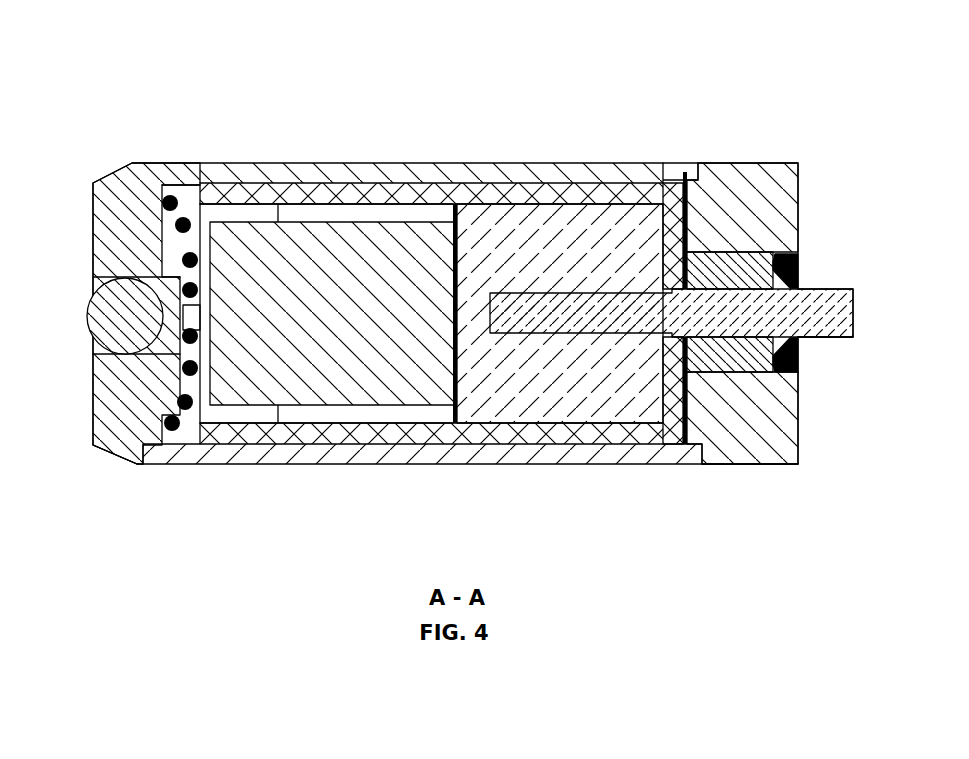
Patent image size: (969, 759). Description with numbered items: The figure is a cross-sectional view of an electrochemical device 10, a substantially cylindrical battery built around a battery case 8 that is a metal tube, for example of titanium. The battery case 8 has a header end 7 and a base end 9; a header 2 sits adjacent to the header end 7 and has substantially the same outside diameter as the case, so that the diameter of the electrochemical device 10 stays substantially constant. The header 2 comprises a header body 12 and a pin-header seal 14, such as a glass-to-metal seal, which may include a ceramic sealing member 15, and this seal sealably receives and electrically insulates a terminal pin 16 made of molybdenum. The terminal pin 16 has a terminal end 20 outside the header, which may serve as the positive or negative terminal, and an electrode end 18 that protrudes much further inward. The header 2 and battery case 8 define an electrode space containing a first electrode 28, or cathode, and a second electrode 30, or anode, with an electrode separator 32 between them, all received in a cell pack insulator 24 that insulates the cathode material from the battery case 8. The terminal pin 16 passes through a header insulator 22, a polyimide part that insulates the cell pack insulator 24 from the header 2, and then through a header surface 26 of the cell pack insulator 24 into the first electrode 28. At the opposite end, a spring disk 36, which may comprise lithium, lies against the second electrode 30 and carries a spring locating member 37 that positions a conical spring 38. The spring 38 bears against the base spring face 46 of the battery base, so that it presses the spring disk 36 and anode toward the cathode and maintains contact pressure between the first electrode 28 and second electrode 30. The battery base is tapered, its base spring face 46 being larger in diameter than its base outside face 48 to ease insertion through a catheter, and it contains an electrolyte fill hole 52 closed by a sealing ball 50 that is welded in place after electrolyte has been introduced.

The header 2 is at (832, 470).
The header end 7 is at (706, 467).
The battery case 8 is at (567, 161).
The base end 9 is at (76, 518).
The electrochemical device 10 is at (338, 62).
The header body 12 is at (755, 162).
The pin-header seal 14 is at (768, 253).
The ceramic sealing member 15 is at (803, 352).
The terminal pin 16 is at (845, 339).
The electrode end 18 is at (506, 302).
The terminal end 20 is at (862, 297).
The header insulator 22 is at (682, 178).
The cell pack insulator 24 is at (618, 437).
The header surface 26 is at (685, 447).
The first electrode 28 is at (528, 412).
The second electrode 30 is at (289, 386).
The electrode separator 32 is at (452, 430).
The spring disk 36 is at (210, 206).
The spring locating member 37 is at (205, 320).
The spring 38 is at (167, 403).
The base spring face 46 is at (157, 187).
The base outside face 48 is at (92, 216).
The sealing ball 50 is at (85, 319).
The electrolyte fill hole 52 is at (92, 275).